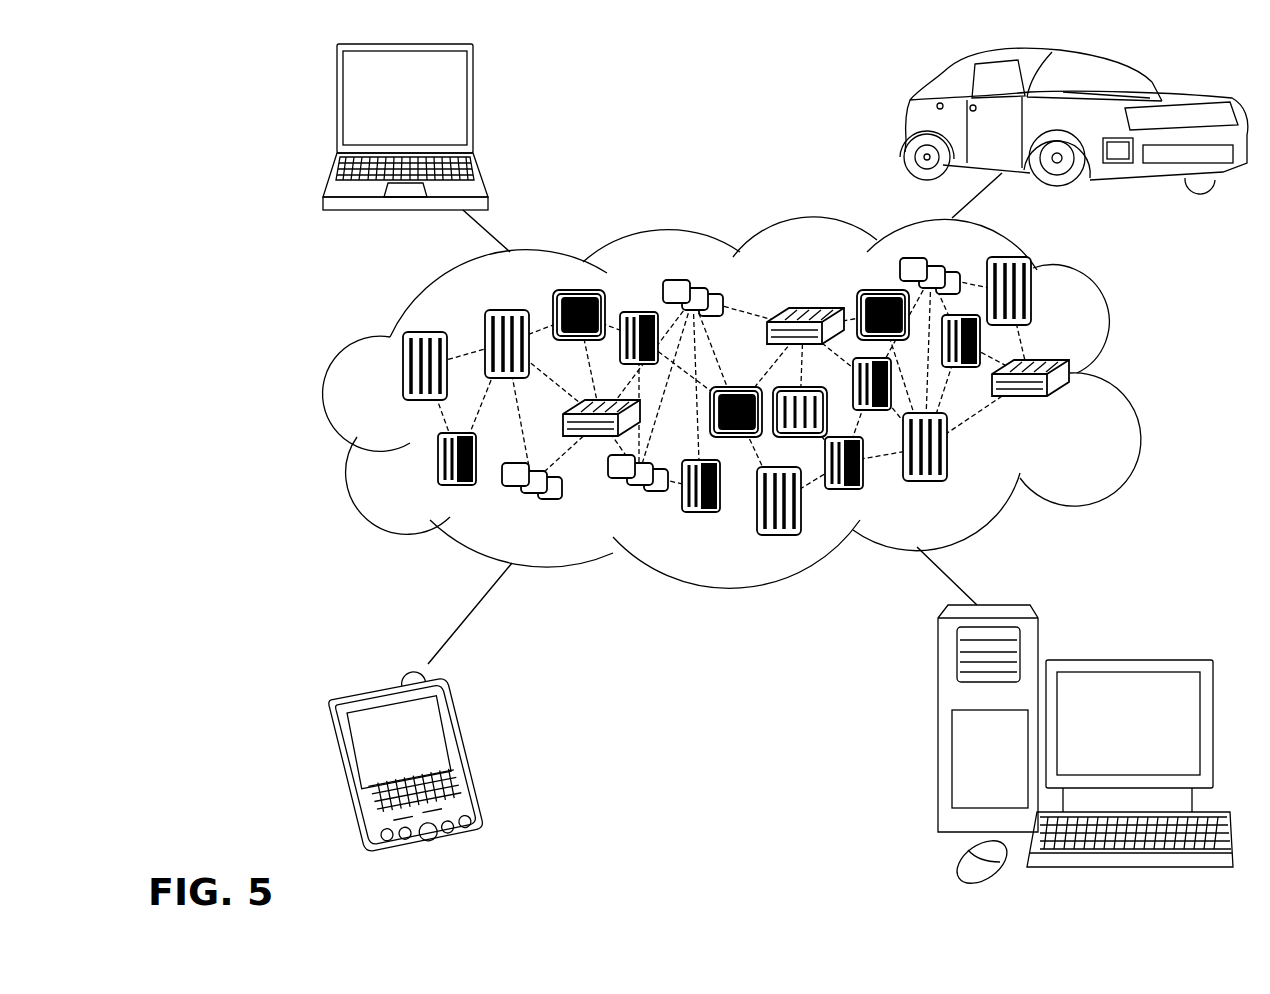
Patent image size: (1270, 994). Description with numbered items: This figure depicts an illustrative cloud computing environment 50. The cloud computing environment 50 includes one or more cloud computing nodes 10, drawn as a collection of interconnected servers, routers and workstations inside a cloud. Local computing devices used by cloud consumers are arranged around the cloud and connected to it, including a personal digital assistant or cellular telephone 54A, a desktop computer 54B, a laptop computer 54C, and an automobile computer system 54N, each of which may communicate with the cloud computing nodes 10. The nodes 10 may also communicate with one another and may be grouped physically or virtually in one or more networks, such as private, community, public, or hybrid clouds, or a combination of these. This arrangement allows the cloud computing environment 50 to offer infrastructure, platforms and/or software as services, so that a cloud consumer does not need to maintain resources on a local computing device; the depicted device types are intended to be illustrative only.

The cloud computing node 10 is at (1072, 407).
The cloud computing environment 50 is at (1128, 378).
The personal digital assistant (PDA) or cellular telephone 54A is at (465, 757).
The desktop computer 54B is at (1123, 660).
The laptop computer 54C is at (477, 106).
The automobile computer system 54N is at (908, 127).